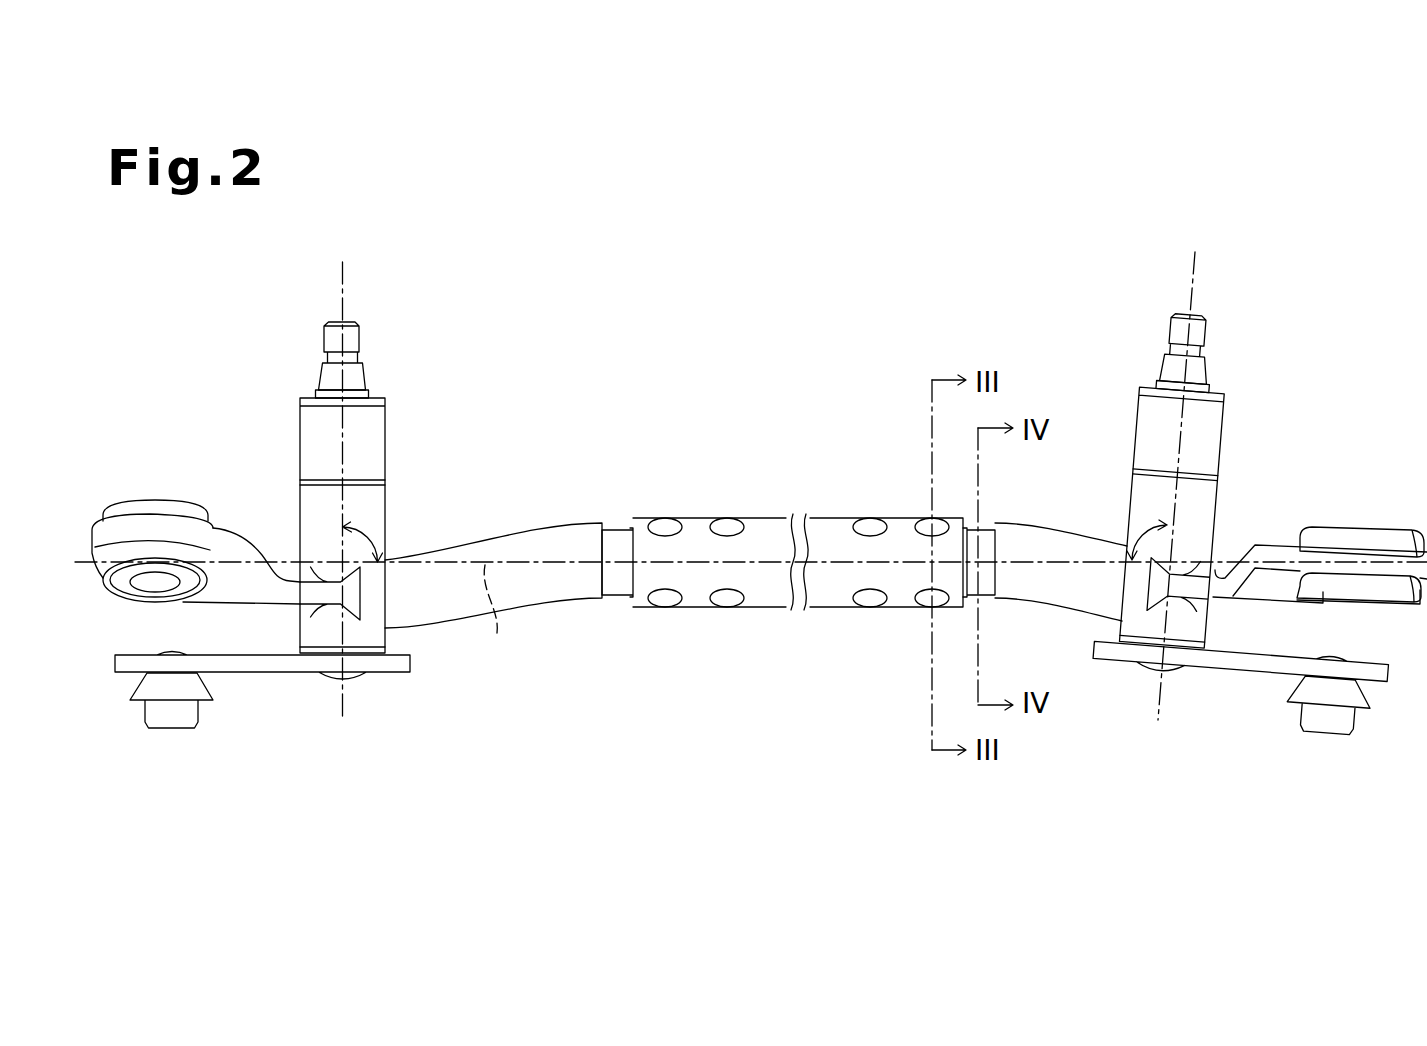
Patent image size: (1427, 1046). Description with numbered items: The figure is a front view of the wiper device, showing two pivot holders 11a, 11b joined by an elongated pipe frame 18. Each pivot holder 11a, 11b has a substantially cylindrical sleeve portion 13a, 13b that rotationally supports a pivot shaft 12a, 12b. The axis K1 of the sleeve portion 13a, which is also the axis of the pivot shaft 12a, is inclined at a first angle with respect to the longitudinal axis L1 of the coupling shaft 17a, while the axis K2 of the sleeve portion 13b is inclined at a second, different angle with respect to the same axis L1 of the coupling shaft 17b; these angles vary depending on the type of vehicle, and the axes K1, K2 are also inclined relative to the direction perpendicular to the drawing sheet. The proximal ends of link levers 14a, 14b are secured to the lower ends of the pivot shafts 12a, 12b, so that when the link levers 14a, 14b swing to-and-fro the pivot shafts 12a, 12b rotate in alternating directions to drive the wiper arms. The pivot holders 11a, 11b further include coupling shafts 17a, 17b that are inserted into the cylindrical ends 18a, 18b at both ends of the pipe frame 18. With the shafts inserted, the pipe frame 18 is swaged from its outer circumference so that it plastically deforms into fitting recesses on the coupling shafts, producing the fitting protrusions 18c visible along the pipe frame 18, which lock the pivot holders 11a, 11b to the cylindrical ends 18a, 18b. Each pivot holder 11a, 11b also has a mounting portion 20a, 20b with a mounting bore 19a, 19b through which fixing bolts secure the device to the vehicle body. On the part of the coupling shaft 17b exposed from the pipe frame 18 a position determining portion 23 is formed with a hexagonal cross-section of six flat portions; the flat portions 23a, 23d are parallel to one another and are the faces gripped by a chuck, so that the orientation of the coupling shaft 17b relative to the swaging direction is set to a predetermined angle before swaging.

The axis of sleeve portion 13a K1 is at (343, 292).
The axis of sleeve portion 13b K2 is at (1194, 273).
The pivot holder 11a is at (306, 525).
The pivot holder 11b is at (1225, 425).
The pivot shaft 12a is at (307, 355).
The pivot shaft 12b is at (1208, 332).
The sleeve portion 13a is at (377, 518).
The sleeve portion 13b is at (1145, 408).
The link lever 14a is at (262, 693).
The link lever 14b is at (1258, 670).
The coupling shaft 17a is at (500, 545).
The coupling shaft 17b is at (1072, 628).
The pipe frame 18 is at (815, 517).
The cylindrical end 18a is at (634, 610).
The cylindrical end 18b is at (965, 608).
The fitting protrusion 18c is at (750, 512).
The mounting bore 19a is at (143, 500).
The mounting bore 19b is at (1388, 538).
The mounting portion 20a is at (178, 520).
The mounting portion 20b is at (1325, 548).
The position determining portion 23 is at (602, 577).
The flat portion 23a is at (615, 530).
The flat portion 23d is at (607, 603).
The axis of the coupling shaft L1 is at (498, 614).